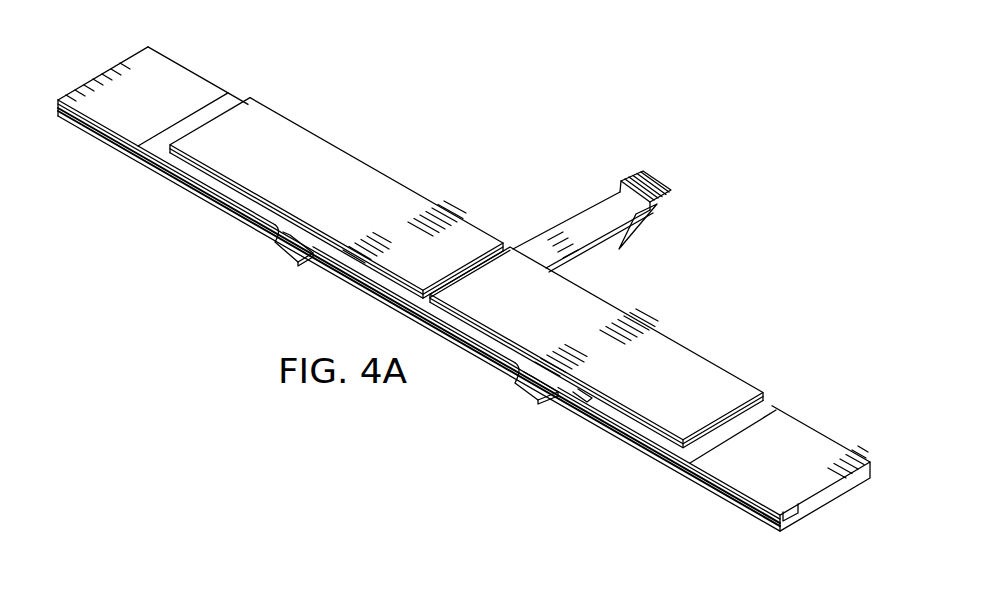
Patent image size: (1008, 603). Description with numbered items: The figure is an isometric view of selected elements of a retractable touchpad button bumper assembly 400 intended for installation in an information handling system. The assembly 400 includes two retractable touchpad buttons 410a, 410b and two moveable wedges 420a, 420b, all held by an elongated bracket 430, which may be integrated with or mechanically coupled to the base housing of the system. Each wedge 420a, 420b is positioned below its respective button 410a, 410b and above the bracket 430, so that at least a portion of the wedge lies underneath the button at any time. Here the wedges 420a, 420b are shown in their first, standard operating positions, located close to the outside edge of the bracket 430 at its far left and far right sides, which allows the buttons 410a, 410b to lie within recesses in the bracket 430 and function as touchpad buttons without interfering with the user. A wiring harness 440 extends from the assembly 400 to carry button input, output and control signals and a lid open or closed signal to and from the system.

The retractable touchpad button bumper assembly 400 is at (750, 64).
The retractable touchpad button 410a is at (368, 177).
The retractable touchpad button 410b is at (688, 363).
The wedge 420a is at (175, 76).
The wedge 420b is at (810, 443).
The bracket 430 is at (168, 176).
The wiring harness 440 is at (578, 224).